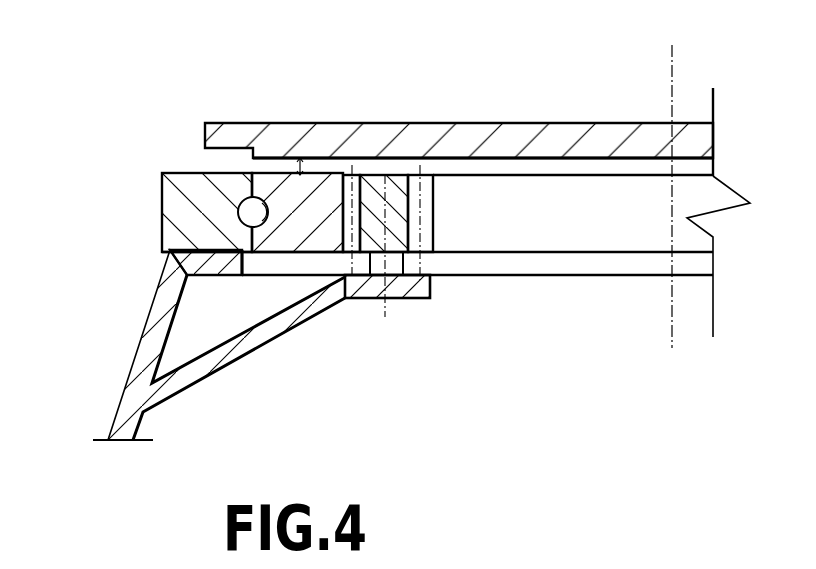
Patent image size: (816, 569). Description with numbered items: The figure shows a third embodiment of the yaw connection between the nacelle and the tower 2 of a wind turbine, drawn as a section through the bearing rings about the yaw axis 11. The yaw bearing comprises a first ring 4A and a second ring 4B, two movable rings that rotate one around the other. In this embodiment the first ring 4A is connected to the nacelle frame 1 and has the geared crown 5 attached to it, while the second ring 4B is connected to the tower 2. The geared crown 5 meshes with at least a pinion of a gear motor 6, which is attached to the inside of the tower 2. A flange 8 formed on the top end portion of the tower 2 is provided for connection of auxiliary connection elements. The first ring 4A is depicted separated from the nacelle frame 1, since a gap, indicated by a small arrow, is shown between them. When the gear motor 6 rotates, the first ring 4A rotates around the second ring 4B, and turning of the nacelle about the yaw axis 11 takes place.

The nacelle frame 1 is at (240, 130).
The tower 2 is at (147, 355).
The first ring 4A is at (312, 190).
The second ring 4B is at (180, 177).
The geared crown 5 is at (349, 190).
The gear motor 6 is at (400, 222).
The flange 8 is at (213, 262).
The yaw axis 11 is at (670, 65).